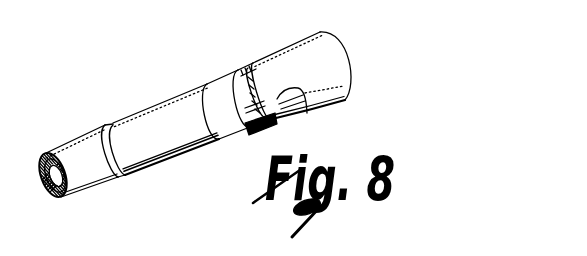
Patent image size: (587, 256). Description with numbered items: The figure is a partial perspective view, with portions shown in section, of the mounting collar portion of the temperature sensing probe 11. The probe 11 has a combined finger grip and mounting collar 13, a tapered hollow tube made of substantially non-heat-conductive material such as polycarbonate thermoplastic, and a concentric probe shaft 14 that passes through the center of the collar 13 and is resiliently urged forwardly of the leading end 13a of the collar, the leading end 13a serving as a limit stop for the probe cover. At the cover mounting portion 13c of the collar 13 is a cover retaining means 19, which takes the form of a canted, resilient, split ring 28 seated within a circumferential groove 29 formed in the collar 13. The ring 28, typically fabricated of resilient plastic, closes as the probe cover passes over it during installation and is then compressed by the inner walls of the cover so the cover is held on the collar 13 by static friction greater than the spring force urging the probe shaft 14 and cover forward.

The temperature sensing probe 11 is at (276, 41).
The combined finger grip and mounting collar 13 is at (158, 103).
The leading end of the collar 13a is at (120, 179).
The cover mounting portion 13c is at (184, 158).
The probe shaft 14 is at (64, 150).
The cover retaining means 19 is at (257, 134).
The split ring 28 is at (241, 66).
The circumferential groove 29 is at (304, 112).